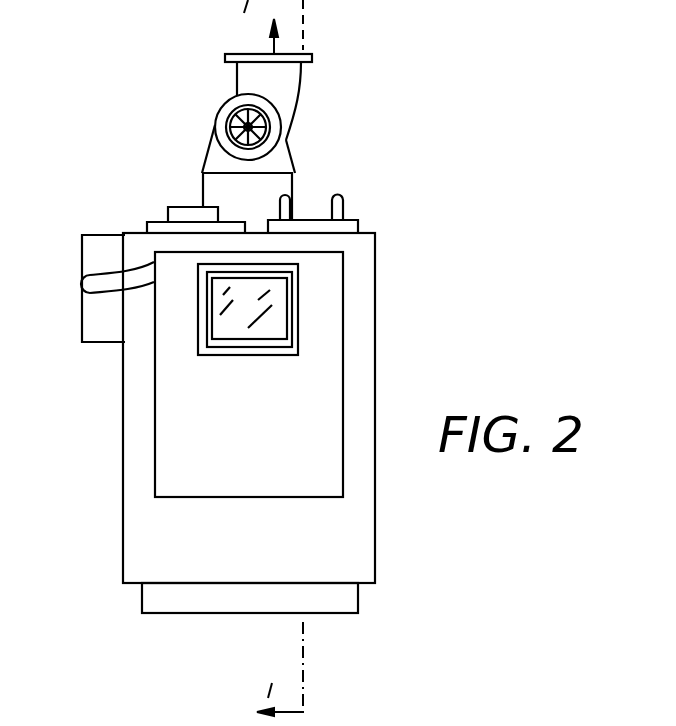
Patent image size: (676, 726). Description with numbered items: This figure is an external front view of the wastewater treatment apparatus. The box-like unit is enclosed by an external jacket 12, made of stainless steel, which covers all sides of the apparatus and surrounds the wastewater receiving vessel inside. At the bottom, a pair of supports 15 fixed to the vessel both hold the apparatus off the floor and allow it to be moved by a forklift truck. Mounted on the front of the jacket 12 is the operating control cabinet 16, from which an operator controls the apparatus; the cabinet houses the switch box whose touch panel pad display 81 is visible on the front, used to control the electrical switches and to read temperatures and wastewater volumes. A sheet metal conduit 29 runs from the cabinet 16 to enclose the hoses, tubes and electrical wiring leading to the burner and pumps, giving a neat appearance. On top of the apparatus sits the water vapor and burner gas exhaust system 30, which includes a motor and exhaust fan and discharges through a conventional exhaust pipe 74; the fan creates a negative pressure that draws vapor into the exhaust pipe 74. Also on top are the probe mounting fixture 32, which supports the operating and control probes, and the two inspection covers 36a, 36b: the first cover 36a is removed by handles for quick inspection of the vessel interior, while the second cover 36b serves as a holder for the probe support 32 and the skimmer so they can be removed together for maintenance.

The external jacket 12 is at (365, 552).
The supports 15 is at (352, 602).
The operating control cabinet 16 is at (214, 473).
The sheet metal conduit 29 is at (90, 313).
The water vapor and burner gas exhaust system 30 is at (315, 157).
The probe mounting fixture 32 is at (193, 206).
The inspection cover 36a is at (352, 218).
The inspection cover 36b is at (155, 220).
The exhaust pipe 74 is at (299, 91).
The touch panel pad display 81 is at (265, 328).